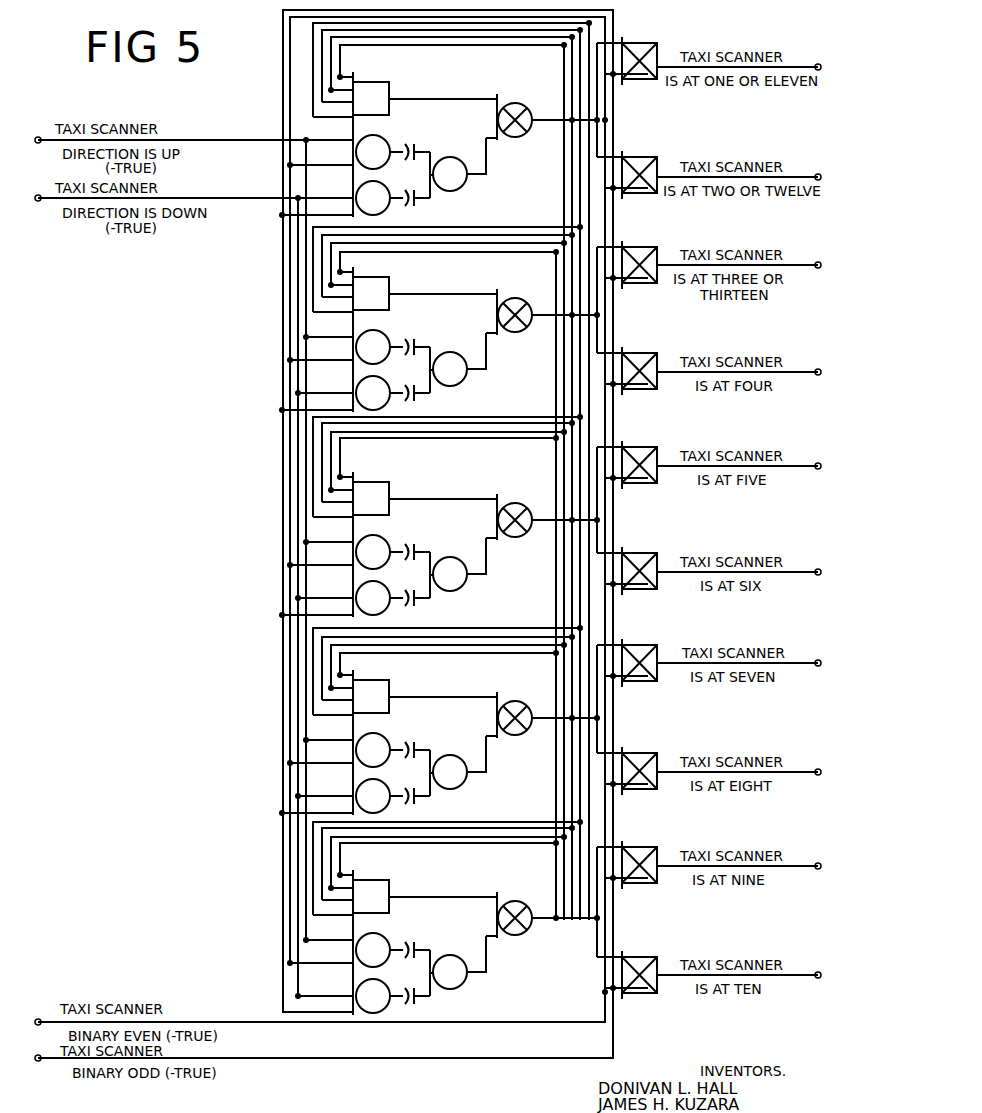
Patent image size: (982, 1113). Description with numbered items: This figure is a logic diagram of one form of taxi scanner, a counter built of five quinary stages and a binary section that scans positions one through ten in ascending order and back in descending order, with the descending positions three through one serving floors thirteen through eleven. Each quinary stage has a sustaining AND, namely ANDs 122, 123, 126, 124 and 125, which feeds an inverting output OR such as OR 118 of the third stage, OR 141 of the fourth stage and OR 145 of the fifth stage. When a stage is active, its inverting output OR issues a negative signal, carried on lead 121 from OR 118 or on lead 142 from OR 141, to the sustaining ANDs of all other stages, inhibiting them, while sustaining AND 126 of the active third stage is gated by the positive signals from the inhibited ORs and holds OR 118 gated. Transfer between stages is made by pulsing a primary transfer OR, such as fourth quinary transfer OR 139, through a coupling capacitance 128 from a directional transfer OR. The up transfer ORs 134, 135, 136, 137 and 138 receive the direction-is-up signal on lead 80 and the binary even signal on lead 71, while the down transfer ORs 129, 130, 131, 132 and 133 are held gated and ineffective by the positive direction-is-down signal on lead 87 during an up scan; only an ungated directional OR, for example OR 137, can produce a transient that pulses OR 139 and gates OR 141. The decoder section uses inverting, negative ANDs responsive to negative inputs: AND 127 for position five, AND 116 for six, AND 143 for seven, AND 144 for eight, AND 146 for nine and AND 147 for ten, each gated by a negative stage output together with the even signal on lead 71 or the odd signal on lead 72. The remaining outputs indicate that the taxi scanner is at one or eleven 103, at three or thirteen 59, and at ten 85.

The taxi scanner is at three or thirteen output 59 is at (820, 261).
The lead 71 is at (318, 1024).
The lead 72 is at (318, 1060).
The lead 80 is at (228, 143).
The taxi scanner is at ten output 85 is at (672, 977).
The lead 87 is at (205, 197).
The taxi scanner is at one or eleven output 103 is at (820, 63).
The inverting negative AND 116 is at (637, 561).
The inverting output OR 118 is at (502, 504).
The lead 121 is at (356, 128).
The quinary sustaining AND 122 is at (371, 98).
The quinary sustaining AND 123 is at (371, 293).
The quinary sustaining AND 124 is at (371, 696).
The quinary sustaining AND 125 is at (371, 896).
The sustaining AND 126 is at (371, 498).
The AND 127 is at (636, 455).
The coupling capacitance 128 is at (398, 574).
The down transfer OR 129 is at (373, 198).
The down transfer OR 130 is at (373, 393).
The down transfer OR 131 is at (373, 598).
The down transfer OR 132 is at (373, 796).
The down transfer OR 133 is at (373, 996).
The up transfer OR 134 is at (373, 152).
The up transfer OR 135 is at (373, 347).
The up transfer OR 136 is at (373, 552).
The up transfer OR 137 is at (373, 750).
The up transfer OR 138 is at (373, 950).
The quinary transfer OR 139 is at (450, 772).
The inverting output OR 141 is at (500, 706).
The lead 142 is at (560, 660).
The AND 143 is at (637, 654).
The AND 144 is at (637, 761).
The inverting output OR 145 is at (501, 900).
The AND 146 is at (637, 855).
The AND 147 is at (637, 965).